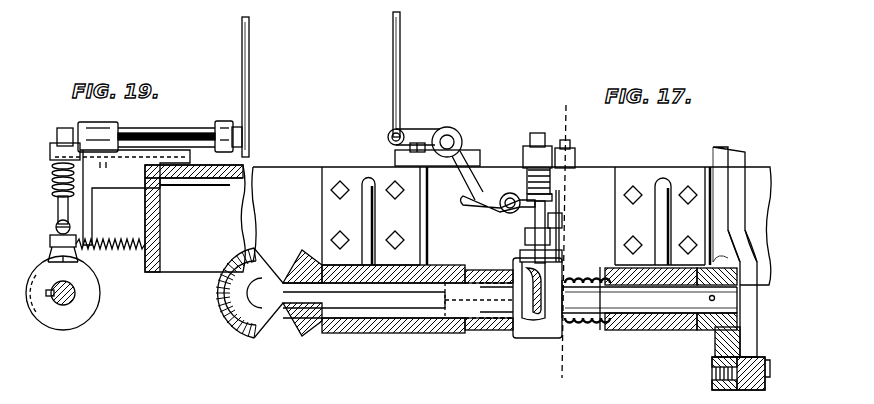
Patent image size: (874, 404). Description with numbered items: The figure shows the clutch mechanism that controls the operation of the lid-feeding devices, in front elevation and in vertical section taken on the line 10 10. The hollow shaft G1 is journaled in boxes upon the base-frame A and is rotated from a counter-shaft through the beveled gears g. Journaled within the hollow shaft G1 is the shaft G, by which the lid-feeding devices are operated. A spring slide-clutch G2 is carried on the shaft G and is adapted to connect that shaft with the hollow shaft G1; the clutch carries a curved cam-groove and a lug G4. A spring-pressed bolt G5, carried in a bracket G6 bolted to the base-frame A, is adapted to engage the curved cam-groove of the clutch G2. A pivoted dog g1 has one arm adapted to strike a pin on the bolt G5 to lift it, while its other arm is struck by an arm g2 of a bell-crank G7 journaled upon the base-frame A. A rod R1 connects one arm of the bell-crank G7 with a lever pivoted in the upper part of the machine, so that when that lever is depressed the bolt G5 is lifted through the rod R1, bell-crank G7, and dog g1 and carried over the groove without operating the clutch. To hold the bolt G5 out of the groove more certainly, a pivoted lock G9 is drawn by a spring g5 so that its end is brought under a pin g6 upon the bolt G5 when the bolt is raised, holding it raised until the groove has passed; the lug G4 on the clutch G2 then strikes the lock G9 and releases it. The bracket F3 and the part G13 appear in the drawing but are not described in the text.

In FIG. 19, the rod R1 is at (249, 55).
In FIG. 17, the rod R1 is at (400, 57).
In FIG. 19, the base-frame A is at (175, 258).
In FIG. 17, the base-frame A is at (296, 176).
In FIG. 19, the shaft G is at (62, 305).
In FIG. 17, the shaft G is at (655, 297).
In FIG. 17, the hollow shaft G1 is at (433, 325).
In FIG. 19, the spring slide-clutch G2 is at (97, 285).
In FIG. 17, the spring slide-clutch G2 is at (506, 328).
In FIG. 19, the lug G4 is at (57, 230).
In FIG. 17, the lug G4 is at (562, 262).
In FIG. 19, the spring-pressed bolt G5 is at (60, 134).
In FIG. 17, the spring-pressed bolt G5 is at (533, 140).
In FIG. 19, the bracket G6 is at (131, 183).
In FIG. 17, the bracket G6 is at (527, 240).
In FIG. 19, the bell-crank G7 is at (168, 142).
In FIG. 17, the bell-crank G7 is at (443, 119).
In FIG. 17, the pivoted lock G9 is at (562, 200).
In FIG. 17, the pin G13 is at (540, 332).
In FIG. 17, the beveled gears g is at (283, 327).
In FIG. 17, the pivoted dog g1 is at (468, 210).
In FIG. 17, the arm of bell-crank g2 is at (714, 358).
In FIG. 19, the spring g5 is at (108, 236).
In FIG. 19, the pin g6 is at (60, 186).
In FIG. 17, the pin g6 is at (556, 192).
In FIG. 17, the bracket F3 is at (752, 305).
In FIG. 17, the section line 10 is at (563, 243).